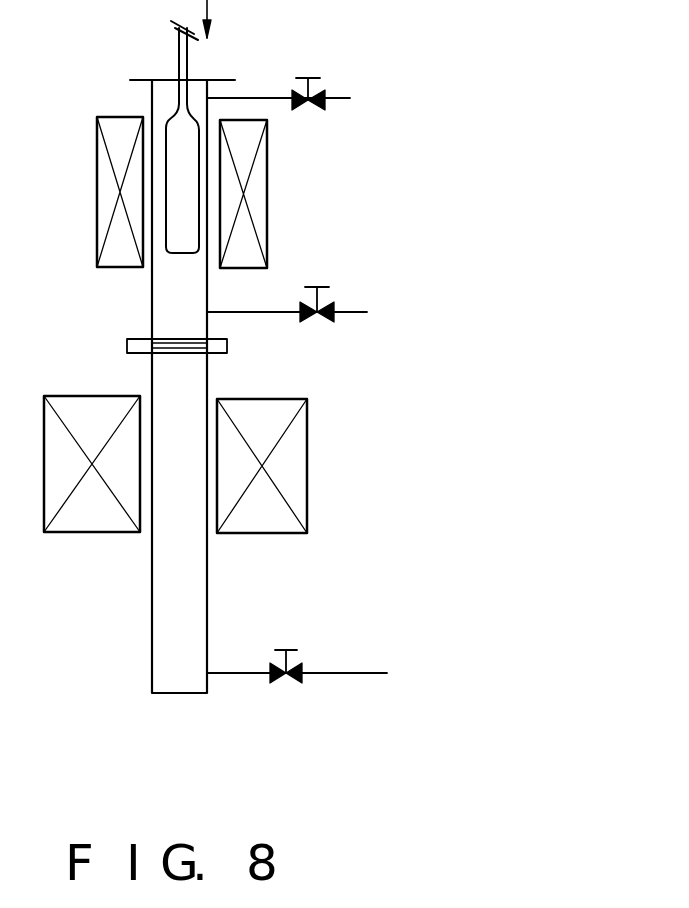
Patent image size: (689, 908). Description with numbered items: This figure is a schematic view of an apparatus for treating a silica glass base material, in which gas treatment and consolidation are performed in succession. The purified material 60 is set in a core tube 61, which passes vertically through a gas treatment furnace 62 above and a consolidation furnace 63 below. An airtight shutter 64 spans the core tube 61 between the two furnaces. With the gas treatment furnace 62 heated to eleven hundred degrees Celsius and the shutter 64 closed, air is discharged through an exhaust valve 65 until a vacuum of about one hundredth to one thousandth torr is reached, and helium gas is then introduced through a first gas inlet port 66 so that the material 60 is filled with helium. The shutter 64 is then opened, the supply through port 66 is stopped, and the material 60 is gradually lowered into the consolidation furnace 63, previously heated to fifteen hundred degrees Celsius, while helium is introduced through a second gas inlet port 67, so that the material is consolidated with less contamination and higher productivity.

The purified material 60 is at (177, 128).
The core tube 61 is at (151, 636).
The gas treatment furnace 62 is at (261, 193).
The consolidation furnace 63 is at (308, 449).
The airtight shutter 64 is at (227, 346).
The exhaust valve 65 is at (326, 98).
The first gas inlet port 66 is at (334, 312).
The second gas inlet port 67 is at (343, 673).